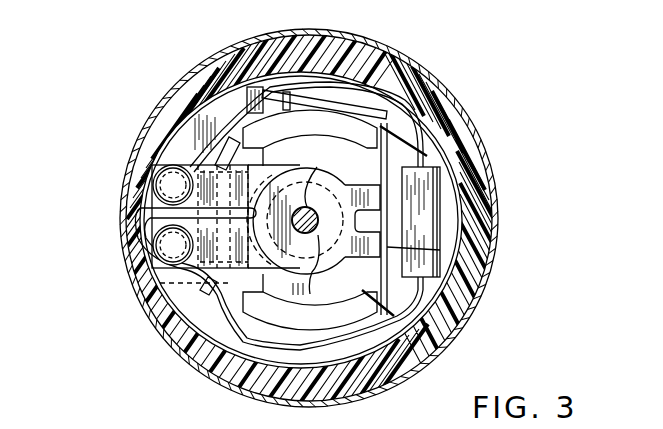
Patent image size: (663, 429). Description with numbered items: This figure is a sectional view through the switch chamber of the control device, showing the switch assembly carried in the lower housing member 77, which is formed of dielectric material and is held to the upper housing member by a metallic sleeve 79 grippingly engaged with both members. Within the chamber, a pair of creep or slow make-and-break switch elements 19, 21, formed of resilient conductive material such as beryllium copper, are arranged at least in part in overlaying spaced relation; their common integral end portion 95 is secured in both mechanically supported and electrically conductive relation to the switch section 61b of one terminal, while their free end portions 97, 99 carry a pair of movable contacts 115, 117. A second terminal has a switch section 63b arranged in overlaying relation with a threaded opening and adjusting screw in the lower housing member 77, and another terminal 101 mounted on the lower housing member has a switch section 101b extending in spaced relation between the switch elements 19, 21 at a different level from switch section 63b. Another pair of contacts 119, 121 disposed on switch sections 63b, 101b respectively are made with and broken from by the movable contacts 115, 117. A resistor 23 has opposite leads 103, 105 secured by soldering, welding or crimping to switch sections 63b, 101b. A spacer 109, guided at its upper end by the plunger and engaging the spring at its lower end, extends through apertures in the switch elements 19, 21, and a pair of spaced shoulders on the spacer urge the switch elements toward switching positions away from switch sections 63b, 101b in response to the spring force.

The switch element 19 is at (160, 168).
The switch element 21 is at (182, 296).
The resistor 23 is at (472, 205).
The switch section 61b is at (443, 347).
The switch section 63b is at (205, 292).
The lower housing member 77 is at (423, 90).
The metallic sleeve 79 is at (452, 108).
The integral end portion 95 is at (440, 250).
The free end portion 97 is at (142, 140).
The free end portion 99 is at (152, 244).
The terminal 101 is at (193, 160).
The switch section 101b is at (232, 150).
The lead 103 is at (468, 131).
The lead 105 is at (447, 317).
The spacer 109 is at (307, 207).
The movable contact 115 is at (153, 185).
The movable contact 117 is at (152, 262).
The contact 119 is at (140, 213).
The contact 121 is at (160, 283).